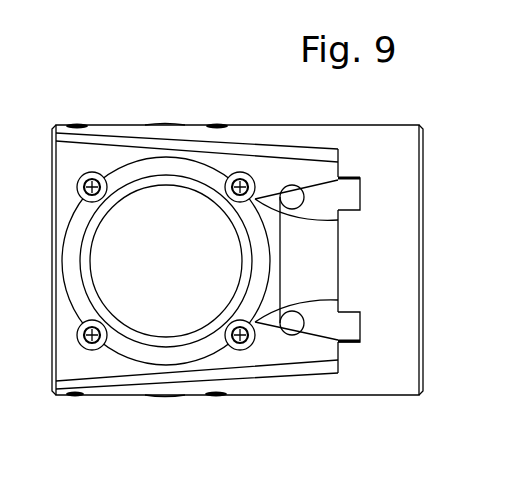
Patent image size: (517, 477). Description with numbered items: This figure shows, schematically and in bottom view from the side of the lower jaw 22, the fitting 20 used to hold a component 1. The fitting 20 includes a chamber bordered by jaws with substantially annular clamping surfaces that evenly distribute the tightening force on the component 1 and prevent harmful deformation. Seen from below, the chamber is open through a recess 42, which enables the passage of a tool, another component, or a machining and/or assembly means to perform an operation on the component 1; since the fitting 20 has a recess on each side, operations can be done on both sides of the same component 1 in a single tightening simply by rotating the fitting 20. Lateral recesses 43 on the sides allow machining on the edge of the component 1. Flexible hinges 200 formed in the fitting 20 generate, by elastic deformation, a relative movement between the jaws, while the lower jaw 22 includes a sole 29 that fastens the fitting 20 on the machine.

The component 1 is at (130, 303).
The fitting 20 is at (436, 146).
The lower jaw 22 is at (110, 155).
The sole 29 is at (382, 383).
The recess 42 is at (157, 227).
The lateral recess 43 is at (150, 123).
The flexible hinge 200 is at (80, 123).